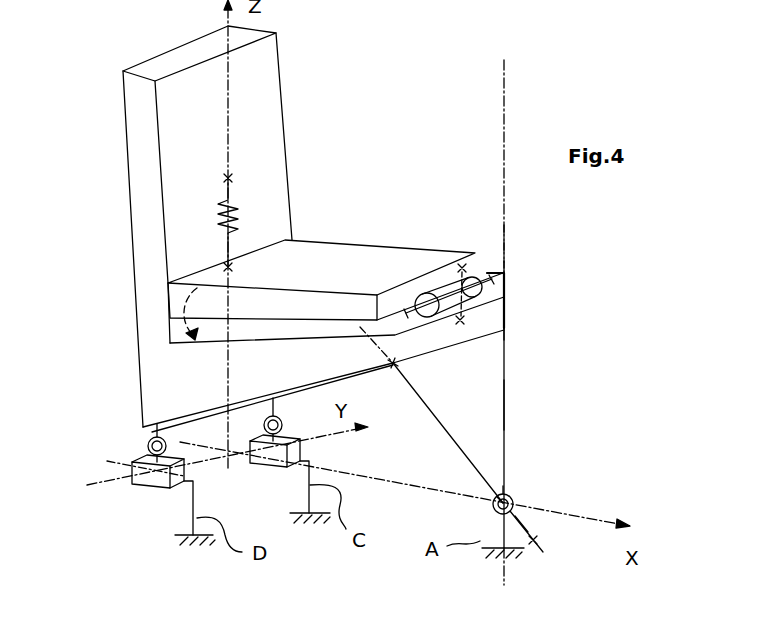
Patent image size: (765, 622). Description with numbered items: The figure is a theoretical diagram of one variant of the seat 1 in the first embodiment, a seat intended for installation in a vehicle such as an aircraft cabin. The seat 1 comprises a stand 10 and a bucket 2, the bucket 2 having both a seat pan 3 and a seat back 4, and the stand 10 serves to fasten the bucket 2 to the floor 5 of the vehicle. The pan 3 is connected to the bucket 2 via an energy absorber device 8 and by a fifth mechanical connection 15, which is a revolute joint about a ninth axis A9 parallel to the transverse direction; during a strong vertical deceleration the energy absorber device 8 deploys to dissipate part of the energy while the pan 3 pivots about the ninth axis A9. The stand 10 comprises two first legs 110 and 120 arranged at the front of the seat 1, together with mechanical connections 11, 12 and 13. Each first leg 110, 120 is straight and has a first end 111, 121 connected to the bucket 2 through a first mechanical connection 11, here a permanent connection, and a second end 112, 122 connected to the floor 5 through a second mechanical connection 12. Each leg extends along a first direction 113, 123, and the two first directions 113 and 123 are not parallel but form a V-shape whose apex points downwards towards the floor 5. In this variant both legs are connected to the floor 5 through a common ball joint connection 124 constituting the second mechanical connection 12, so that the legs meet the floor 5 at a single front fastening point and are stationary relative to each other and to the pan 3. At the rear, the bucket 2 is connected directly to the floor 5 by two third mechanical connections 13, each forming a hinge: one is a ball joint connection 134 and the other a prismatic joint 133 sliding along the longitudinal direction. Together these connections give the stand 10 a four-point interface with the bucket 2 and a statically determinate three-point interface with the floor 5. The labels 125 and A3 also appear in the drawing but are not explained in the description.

The seat 1 is at (400, 150).
The bucket 2 is at (137, 131).
The seat pan 3 is at (323, 254).
The seat back 4 is at (264, 88).
The floor 5 is at (183, 534).
The energy absorber device 8 is at (243, 197).
The stand 10 is at (618, 472).
The first mechanical connection 11 is at (513, 327).
The second mechanical connection 12 is at (517, 499).
The third mechanical connection 13 is at (219, 459).
The fifth mechanical connection 15 is at (440, 290).
The first leg 110 is at (505, 403).
The first end 111 is at (505, 330).
The second end 112 is at (507, 497).
The first direction 113 is at (505, 255).
The first leg 120 is at (474, 456).
The first end 121 is at (394, 364).
The second end 122 is at (492, 499).
The first direction 123 is at (548, 552).
The ball joint connection 124 is at (530, 545).
The upper arm 125 is at (403, 10).
The prismatic joint 133 is at (273, 467).
The ball joint connection 134 is at (143, 443).
The axis A3 is at (448, 13).
The ninth axis A9 is at (482, 277).